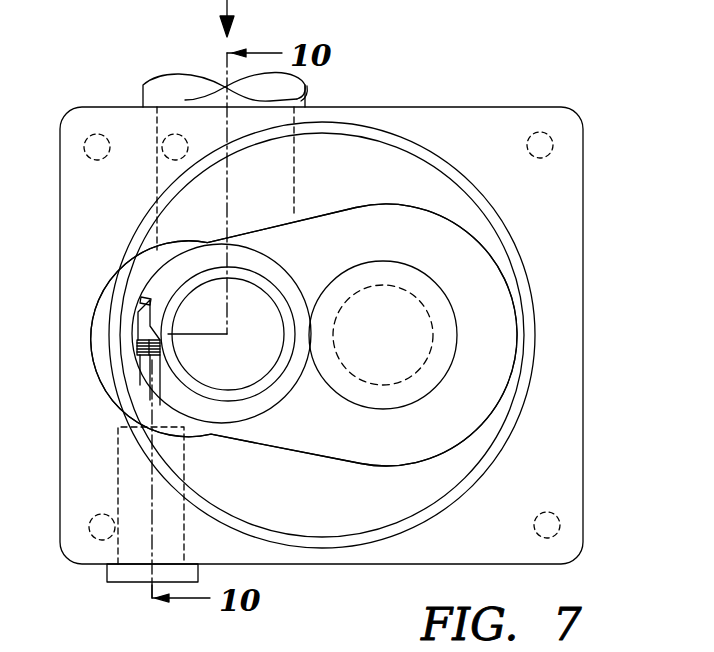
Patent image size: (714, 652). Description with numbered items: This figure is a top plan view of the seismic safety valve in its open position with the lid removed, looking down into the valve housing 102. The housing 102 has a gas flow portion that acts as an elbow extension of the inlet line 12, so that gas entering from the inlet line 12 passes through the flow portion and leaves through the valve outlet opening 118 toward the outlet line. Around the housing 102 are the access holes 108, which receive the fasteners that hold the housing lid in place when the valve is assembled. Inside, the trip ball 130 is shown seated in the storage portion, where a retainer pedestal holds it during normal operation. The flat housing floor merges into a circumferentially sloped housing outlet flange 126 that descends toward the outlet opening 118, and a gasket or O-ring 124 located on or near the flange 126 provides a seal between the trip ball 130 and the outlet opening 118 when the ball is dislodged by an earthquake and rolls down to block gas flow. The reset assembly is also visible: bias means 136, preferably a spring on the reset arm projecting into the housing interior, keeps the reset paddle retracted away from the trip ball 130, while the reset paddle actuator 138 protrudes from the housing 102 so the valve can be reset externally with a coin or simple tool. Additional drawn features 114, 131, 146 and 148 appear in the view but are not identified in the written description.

The inlet line 12 is at (143, 99).
The valve housing 102 is at (584, 514).
The access holes 108 is at (553, 143).
The annular ring 114 is at (482, 466).
The valve outlet opening 118 is at (198, 302).
The gasket or O-ring 124 is at (233, 398).
The circumferentially sloped housing outlet flange 126 is at (282, 398).
The trip ball 130 is at (413, 332).
The gear 131 is at (458, 364).
The bias means 136 is at (137, 347).
The reset paddle actuator 138 is at (122, 582).
The cam plate 146 is at (330, 211).
The cam plate outline 148 is at (287, 263).